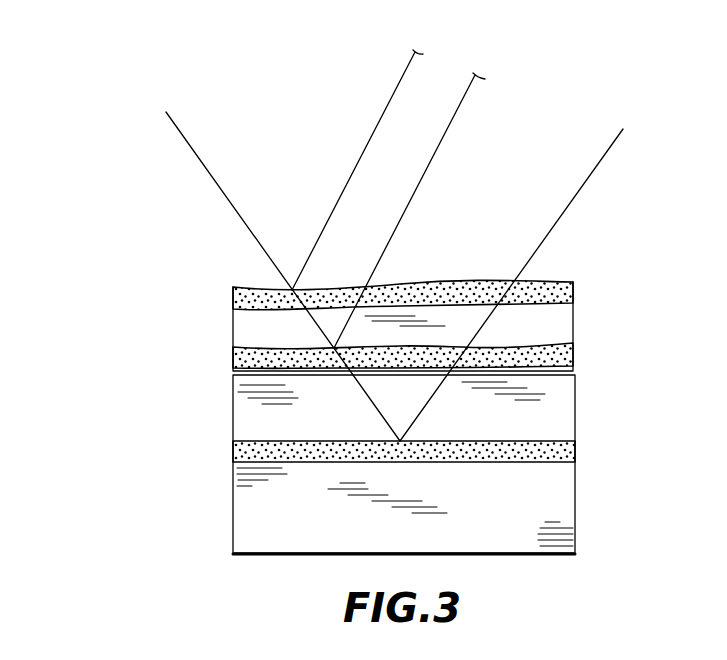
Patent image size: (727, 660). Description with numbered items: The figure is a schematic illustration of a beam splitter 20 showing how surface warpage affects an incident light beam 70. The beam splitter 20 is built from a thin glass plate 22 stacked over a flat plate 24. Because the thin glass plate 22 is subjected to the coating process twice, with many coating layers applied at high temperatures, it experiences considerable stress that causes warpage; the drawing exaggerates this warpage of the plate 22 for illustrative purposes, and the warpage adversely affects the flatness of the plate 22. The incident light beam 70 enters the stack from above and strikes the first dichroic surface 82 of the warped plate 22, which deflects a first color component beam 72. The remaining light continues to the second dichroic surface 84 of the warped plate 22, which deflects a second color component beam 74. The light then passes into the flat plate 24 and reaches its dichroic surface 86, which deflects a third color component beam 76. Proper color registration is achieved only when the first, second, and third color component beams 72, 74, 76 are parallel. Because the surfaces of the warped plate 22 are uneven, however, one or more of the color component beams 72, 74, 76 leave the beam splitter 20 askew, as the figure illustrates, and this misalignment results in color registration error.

The optical article / coated substrate assembly 20 is at (134, 279).
The thin glass plate 22 is at (565, 315).
The flat plate 24 is at (563, 510).
The incident light beam 70 is at (193, 148).
The first color component beam 72 is at (383, 118).
The second color component beam 74 is at (442, 148).
The third color component beam 76 is at (578, 187).
The first dichroic surface 82 is at (260, 285).
The second dichroic surface 84 is at (260, 347).
The dichroic surface 86 is at (260, 440).